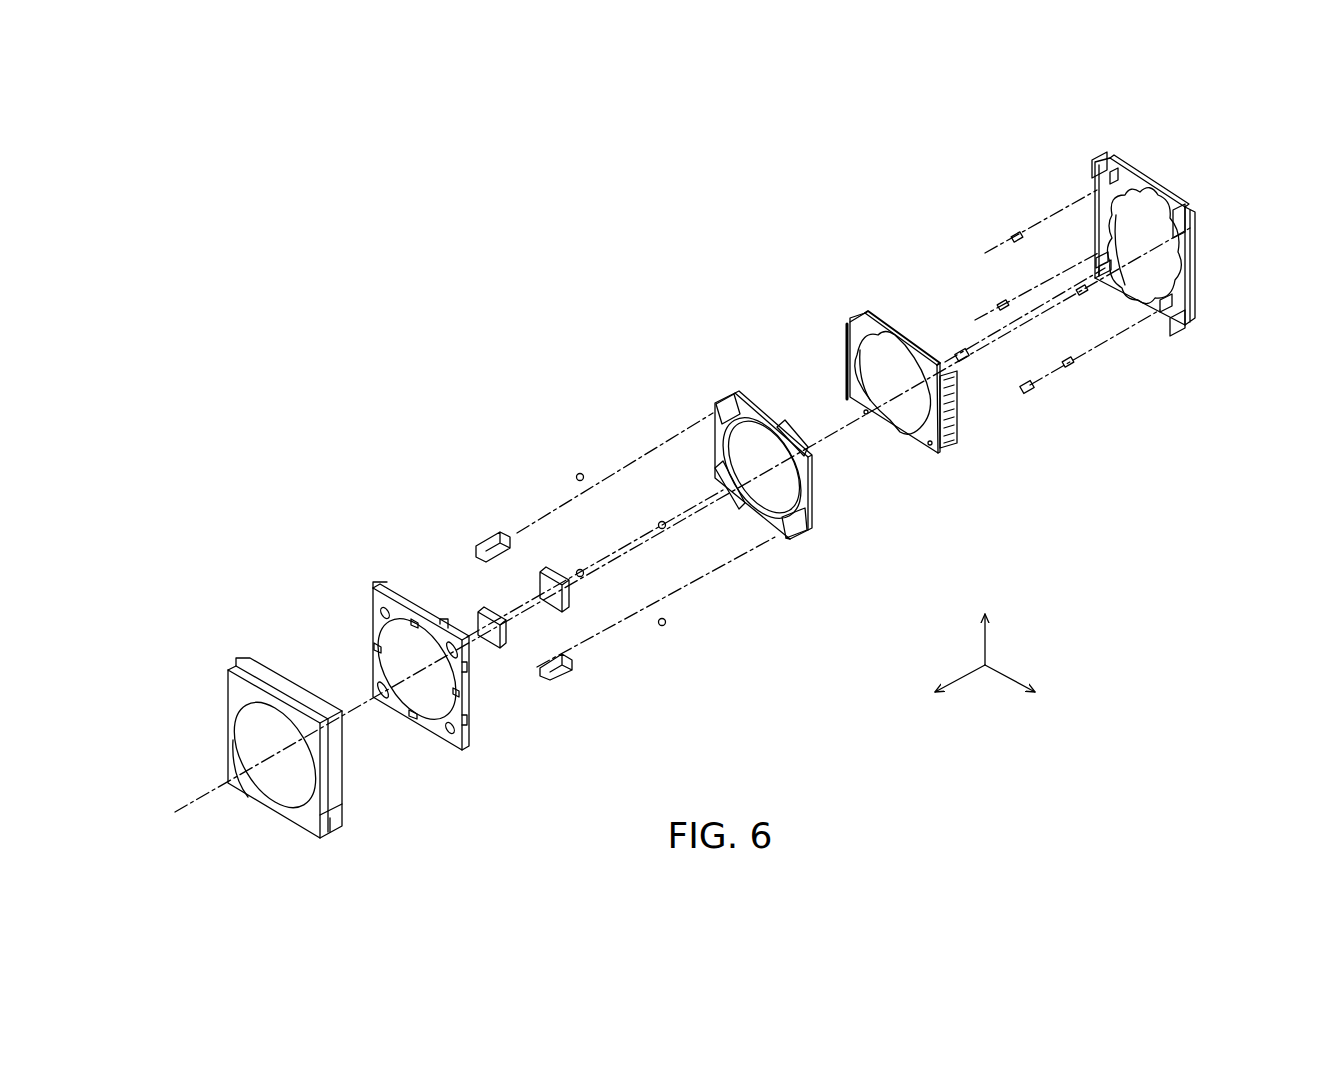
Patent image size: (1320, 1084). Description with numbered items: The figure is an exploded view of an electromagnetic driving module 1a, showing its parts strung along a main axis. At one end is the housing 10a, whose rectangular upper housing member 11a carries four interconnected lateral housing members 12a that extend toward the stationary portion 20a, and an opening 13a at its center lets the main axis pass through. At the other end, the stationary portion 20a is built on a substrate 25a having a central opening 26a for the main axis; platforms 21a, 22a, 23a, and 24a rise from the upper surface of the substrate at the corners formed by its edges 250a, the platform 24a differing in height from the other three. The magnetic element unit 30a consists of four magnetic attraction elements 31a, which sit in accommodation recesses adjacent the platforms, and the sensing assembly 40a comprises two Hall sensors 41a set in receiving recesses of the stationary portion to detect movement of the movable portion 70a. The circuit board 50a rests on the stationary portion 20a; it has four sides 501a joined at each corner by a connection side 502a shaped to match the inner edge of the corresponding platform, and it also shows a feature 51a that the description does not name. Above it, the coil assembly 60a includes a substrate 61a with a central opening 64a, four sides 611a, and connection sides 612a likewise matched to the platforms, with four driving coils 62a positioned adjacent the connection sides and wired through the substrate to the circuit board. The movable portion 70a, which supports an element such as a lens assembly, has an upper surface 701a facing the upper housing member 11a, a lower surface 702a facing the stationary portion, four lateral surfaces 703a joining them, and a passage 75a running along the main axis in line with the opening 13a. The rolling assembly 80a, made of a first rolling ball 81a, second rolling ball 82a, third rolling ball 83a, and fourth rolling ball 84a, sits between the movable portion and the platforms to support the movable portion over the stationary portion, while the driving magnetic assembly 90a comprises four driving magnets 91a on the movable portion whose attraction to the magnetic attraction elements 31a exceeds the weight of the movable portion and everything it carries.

The electromagnetic driving module 1a is at (366, 296).
The housing 10a is at (217, 636).
The upper housing member 11a is at (242, 700).
The lateral housing members 12a is at (278, 686).
The opening 13a is at (283, 790).
The stationary portion 20a is at (1059, 138).
The platform 21a is at (1090, 163).
The platform 22a is at (1187, 226).
The platform 23a is at (1178, 320).
The platform 24a is at (1094, 262).
The substrate 25a is at (1147, 180).
The opening 26a is at (1104, 233).
The edges 250a is at (1202, 270).
The magnetic element unit 30a is at (955, 198).
The magnetic attraction elements 31a is at (1000, 303).
The sensing assembly 40a is at (1047, 434).
The Hall sensors 41a is at (970, 356).
The circuit board 50a is at (821, 283).
The circuit board opening 51a is at (903, 410).
The sides 501a is at (850, 325).
The connection side 502a is at (858, 320).
The coil assembly 60a is at (676, 364).
The substrate 61a is at (720, 394).
The driving coils 62a is at (783, 538).
The opening 64a is at (712, 468).
The sides 611a is at (760, 523).
The connection side 612a is at (803, 537).
The movable portion 70a is at (352, 558).
The passage 75a is at (430, 700).
The upper surface 701a is at (380, 624).
The lower surface 702a is at (426, 617).
The lateral surfaces 703a is at (468, 700).
The rolling assembly 80a is at (535, 447).
The first rolling ball 81a is at (582, 473).
The second rolling ball 82a is at (663, 530).
The third rolling ball 83a is at (664, 627).
The fourth rolling ball 84a is at (582, 569).
The driving magnetic assembly 90a is at (456, 498).
The driving magnets 91a is at (574, 598).